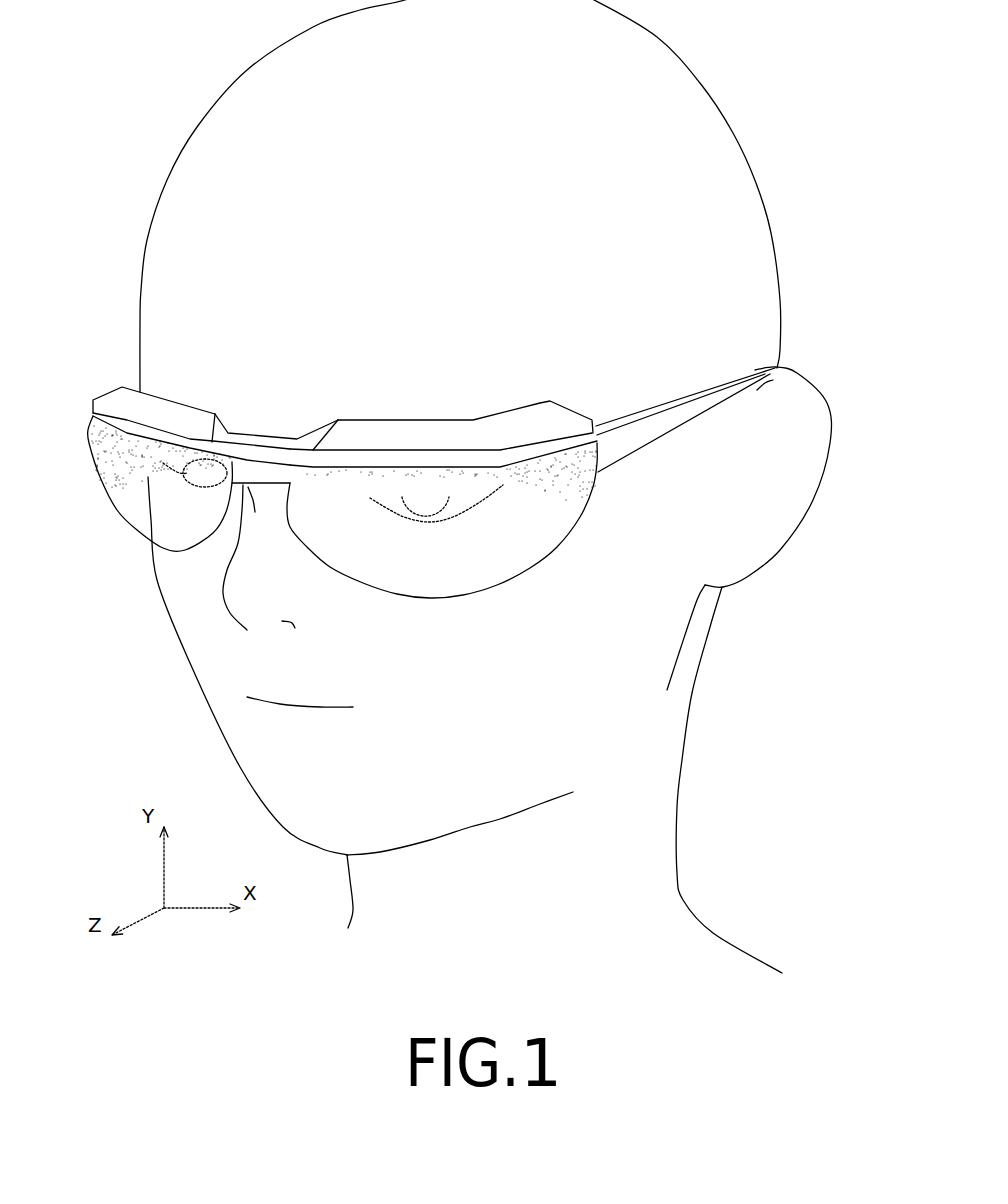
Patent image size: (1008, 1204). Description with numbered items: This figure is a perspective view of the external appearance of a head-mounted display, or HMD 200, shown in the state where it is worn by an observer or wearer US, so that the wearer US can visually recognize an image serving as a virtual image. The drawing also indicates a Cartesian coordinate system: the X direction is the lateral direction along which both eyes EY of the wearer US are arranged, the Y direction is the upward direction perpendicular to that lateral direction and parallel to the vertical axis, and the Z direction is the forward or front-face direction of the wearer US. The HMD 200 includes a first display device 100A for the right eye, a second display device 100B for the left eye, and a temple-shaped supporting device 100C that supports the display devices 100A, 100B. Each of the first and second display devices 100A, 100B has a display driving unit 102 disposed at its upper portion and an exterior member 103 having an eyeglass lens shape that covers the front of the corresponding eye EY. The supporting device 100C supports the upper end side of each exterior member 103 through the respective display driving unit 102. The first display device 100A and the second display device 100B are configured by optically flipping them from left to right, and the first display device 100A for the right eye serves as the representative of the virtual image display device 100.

The observer or wearer US is at (757, 180).
The head-mounted display (HMD) 200 is at (431, 457).
The virtual image display device 100 is at (431, 490).
The first display device 100A is at (208, 395).
The second display device 100B is at (505, 400).
The supporting device 100C is at (632, 440).
The display driving unit 102 is at (178, 420).
The exterior member 103 is at (190, 533).
The eyes EY is at (180, 467).